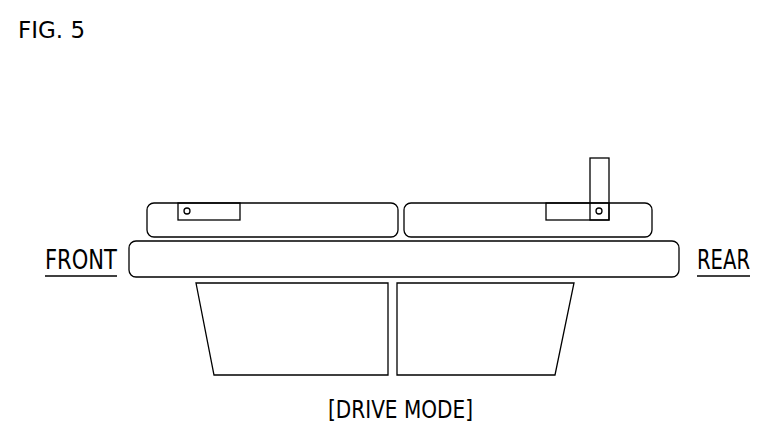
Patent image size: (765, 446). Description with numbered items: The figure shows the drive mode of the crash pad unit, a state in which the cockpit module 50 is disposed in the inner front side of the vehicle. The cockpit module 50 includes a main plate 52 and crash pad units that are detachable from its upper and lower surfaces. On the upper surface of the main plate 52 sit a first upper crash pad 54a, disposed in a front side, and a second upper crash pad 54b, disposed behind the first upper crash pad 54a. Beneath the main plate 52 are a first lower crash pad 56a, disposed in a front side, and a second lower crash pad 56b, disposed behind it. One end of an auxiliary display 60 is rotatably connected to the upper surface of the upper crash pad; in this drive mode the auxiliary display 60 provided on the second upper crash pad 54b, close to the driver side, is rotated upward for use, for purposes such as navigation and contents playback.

The cockpit module 50 is at (397, 160).
The main plate 52 is at (460, 258).
The first upper crash pad 54a is at (310, 218).
The second upper crash pad 54b is at (525, 216).
The first lower crash pad 56a is at (227, 330).
The second lower crash pad 56b is at (536, 330).
The auxiliary display 60 is at (218, 211).